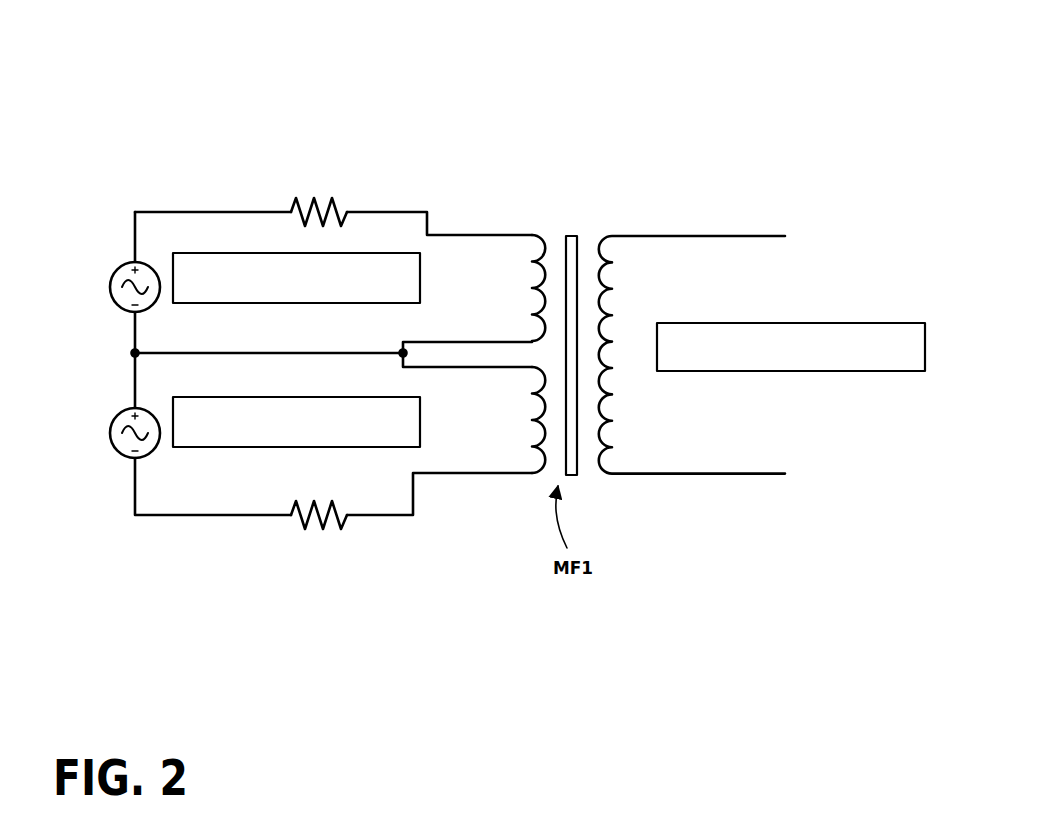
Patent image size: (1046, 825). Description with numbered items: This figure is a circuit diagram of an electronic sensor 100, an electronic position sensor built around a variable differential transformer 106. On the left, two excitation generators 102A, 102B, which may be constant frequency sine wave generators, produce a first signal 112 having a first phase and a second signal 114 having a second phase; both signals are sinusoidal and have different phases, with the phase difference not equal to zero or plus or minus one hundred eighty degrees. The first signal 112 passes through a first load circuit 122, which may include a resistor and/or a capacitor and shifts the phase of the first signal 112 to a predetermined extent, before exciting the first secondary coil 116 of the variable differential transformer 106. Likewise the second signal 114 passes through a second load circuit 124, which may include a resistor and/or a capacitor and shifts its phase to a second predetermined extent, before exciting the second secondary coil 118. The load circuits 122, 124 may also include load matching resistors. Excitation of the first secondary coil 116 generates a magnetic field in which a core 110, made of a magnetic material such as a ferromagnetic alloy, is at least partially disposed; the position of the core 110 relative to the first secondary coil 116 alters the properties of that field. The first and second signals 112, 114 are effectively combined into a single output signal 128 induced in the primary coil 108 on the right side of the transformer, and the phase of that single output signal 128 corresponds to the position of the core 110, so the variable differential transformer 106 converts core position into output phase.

The electronic sensor 100 is at (214, 128).
The excitation generator 102A is at (97, 283).
The excitation generator 102B is at (98, 437).
The variable differential transformer 106 is at (656, 319).
The primary coil 108 is at (617, 475).
The core 110 is at (570, 235).
The first signal 112 is at (212, 253).
The second signal 114 is at (217, 447).
The first secondary coil 116 is at (503, 235).
The second secondary coil 118 is at (503, 475).
The first load circuit 122 is at (335, 200).
The second load circuit 124 is at (302, 530).
The single output signal 128 is at (885, 323).